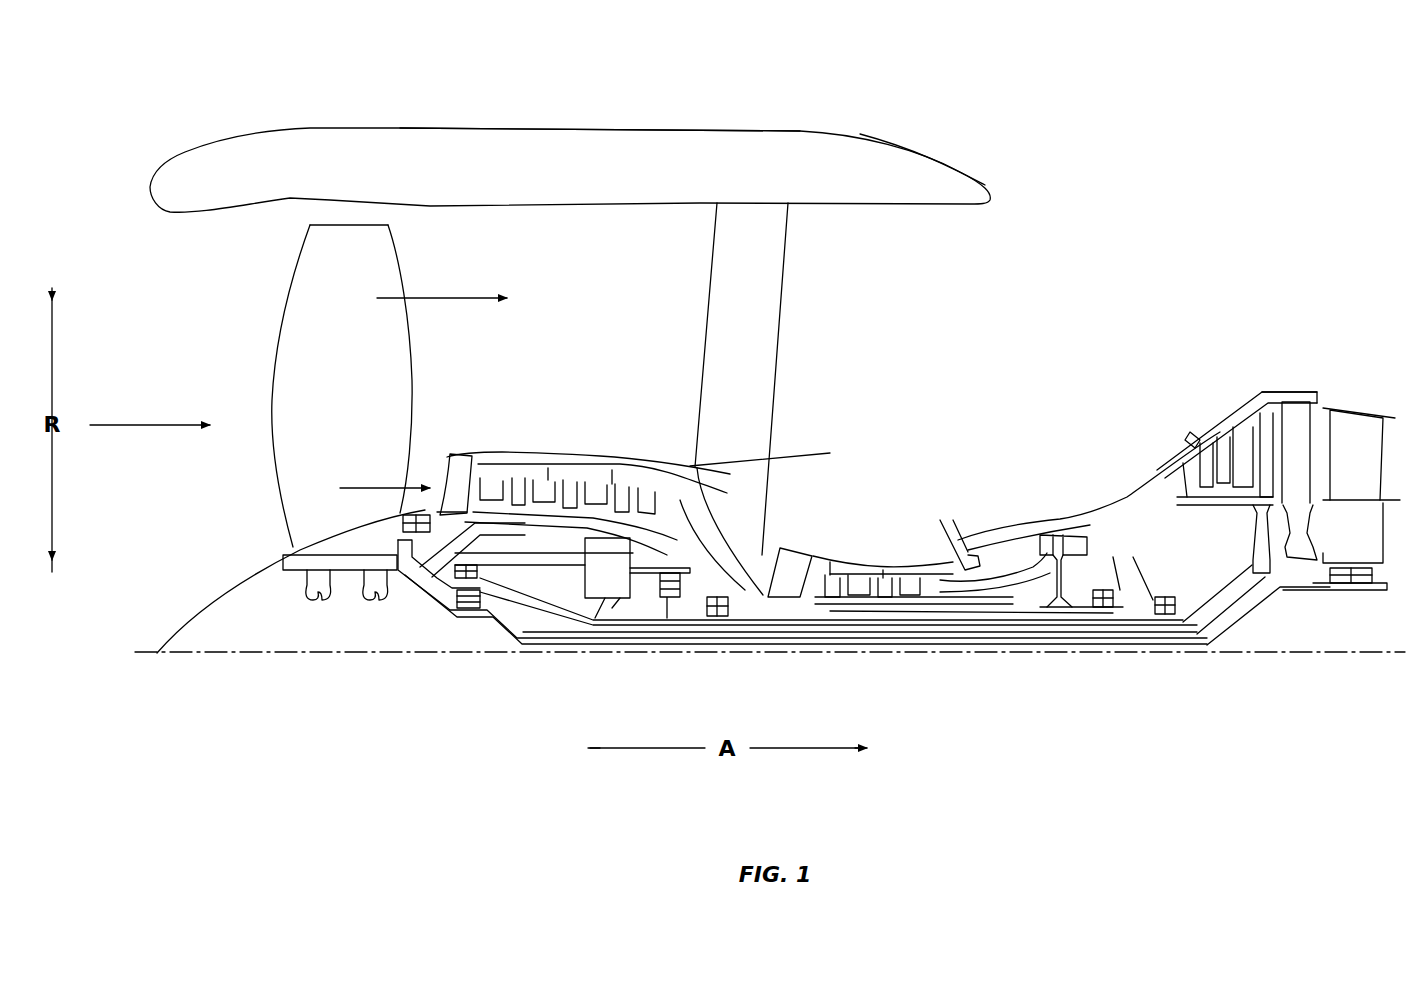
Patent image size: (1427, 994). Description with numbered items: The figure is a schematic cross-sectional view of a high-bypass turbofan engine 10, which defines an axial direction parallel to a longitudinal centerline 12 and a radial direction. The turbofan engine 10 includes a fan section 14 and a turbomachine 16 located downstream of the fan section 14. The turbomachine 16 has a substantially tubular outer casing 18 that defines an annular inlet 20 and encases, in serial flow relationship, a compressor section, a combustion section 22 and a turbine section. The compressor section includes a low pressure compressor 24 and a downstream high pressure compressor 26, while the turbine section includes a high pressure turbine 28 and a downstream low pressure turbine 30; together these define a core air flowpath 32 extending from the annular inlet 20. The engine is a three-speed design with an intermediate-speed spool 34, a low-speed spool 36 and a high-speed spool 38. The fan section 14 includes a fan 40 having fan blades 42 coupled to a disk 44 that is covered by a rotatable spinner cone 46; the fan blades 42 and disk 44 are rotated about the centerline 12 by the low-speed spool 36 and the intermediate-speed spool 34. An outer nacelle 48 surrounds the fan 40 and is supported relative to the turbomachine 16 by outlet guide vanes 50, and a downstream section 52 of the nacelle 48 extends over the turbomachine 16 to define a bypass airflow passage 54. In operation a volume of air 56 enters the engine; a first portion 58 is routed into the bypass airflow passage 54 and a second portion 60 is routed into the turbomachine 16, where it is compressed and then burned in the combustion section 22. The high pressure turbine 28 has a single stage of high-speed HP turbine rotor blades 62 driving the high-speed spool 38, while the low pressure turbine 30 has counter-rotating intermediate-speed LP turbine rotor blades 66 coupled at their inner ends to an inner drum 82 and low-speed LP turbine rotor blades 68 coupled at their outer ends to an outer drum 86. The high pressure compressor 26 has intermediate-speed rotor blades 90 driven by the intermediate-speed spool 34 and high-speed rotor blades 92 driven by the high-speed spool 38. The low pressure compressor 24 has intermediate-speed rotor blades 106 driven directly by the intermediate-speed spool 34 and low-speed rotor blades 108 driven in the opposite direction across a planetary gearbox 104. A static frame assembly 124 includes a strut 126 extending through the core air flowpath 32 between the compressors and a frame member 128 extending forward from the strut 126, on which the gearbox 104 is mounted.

The turbofan engine 10 is at (1162, 152).
The longitudinal centerline 12 is at (250, 656).
The fan section 14 is at (268, 222).
The turbomachine 16 is at (958, 328).
The outer casing 18 is at (795, 452).
The annular inlet 20 is at (438, 464).
The combustion section 22 is at (993, 520).
The low pressure compressor 24 is at (569, 454).
The high pressure compressor 26 is at (863, 545).
The high pressure turbine 28 is at (1060, 505).
The low pressure turbine 30 is at (1233, 355).
The core air flowpath 32 is at (742, 560).
The intermediate-speed spool 34 is at (920, 622).
The low-speed spool 36 is at (1010, 640).
The high-speed spool 38 is at (970, 610).
The fan 40 is at (217, 342).
The fan blades 42 is at (342, 386).
The disk 44 is at (305, 550).
The spinner cone 46 is at (185, 622).
The outer nacelle 48 is at (493, 143).
The outlet guide vanes 50 is at (707, 293).
The downstream section 52 is at (888, 147).
The bypass airflow passage 54 is at (804, 379).
The volume of air 56 is at (140, 425).
The first portion of air 58 is at (460, 298).
The second portion of air 60 is at (375, 488).
The high-speed HP turbine rotor blades 62 is at (1090, 545).
The intermediate-speed LP turbine rotor blades 66 is at (1212, 487).
The low-speed LP turbine rotor blades 68 is at (1205, 450).
The inner drum 82 is at (1245, 505).
The outer drum 86 is at (1270, 390).
The intermediate-speed HP compressor rotor blades 90 is at (831, 573).
The high-speed HP compressor rotor blades 92 is at (883, 588).
The gearbox 104 is at (585, 547).
The intermediate-speed LP compressor rotor blades 106 is at (612, 480).
The low-speed LP compressor rotor blades 108 is at (548, 477).
The frame assembly 124 is at (787, 479).
The strut 126 is at (713, 547).
The frame member 128 is at (540, 567).